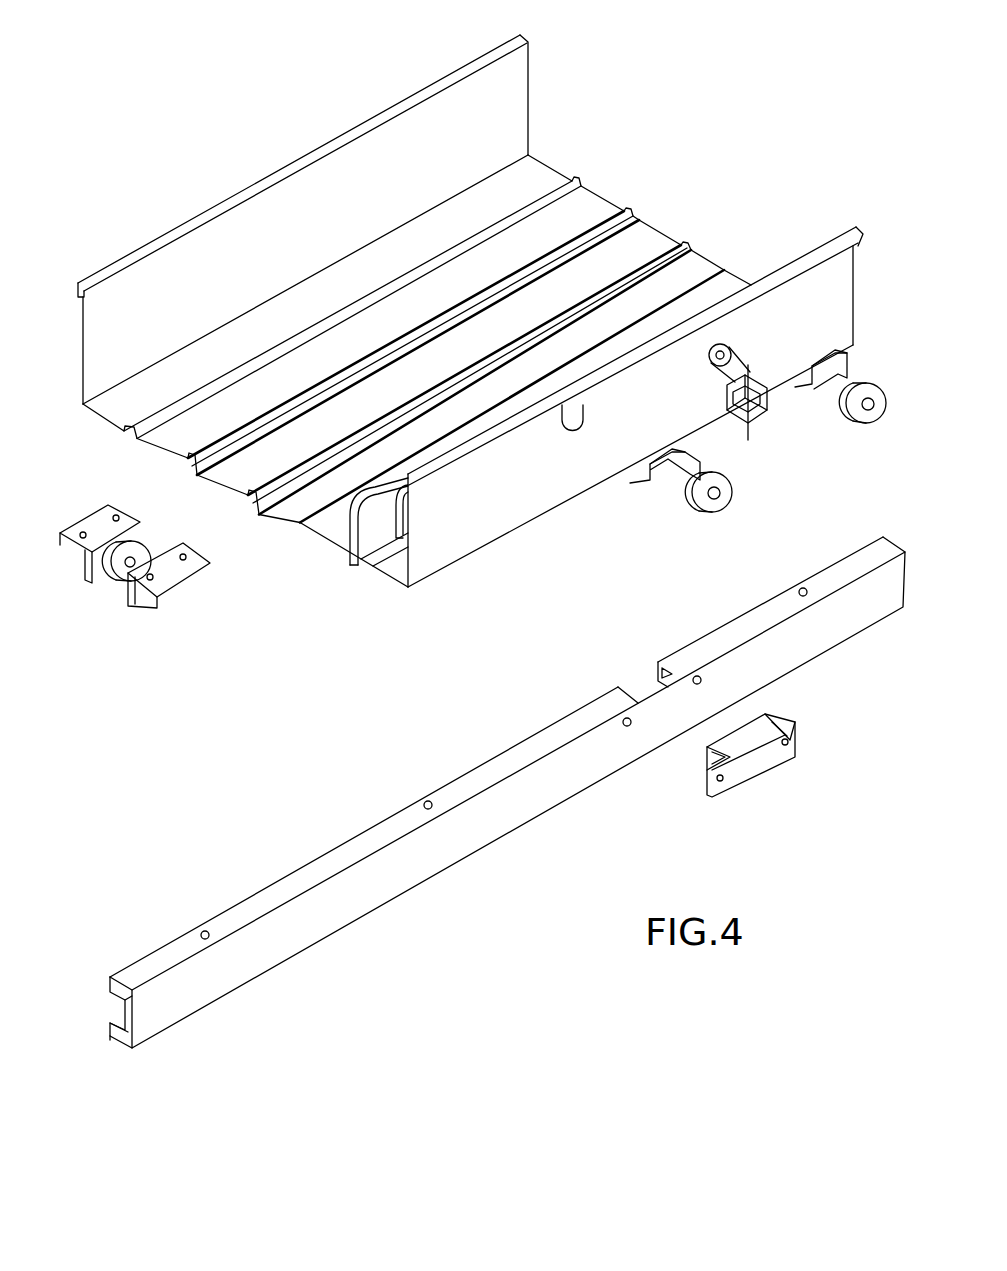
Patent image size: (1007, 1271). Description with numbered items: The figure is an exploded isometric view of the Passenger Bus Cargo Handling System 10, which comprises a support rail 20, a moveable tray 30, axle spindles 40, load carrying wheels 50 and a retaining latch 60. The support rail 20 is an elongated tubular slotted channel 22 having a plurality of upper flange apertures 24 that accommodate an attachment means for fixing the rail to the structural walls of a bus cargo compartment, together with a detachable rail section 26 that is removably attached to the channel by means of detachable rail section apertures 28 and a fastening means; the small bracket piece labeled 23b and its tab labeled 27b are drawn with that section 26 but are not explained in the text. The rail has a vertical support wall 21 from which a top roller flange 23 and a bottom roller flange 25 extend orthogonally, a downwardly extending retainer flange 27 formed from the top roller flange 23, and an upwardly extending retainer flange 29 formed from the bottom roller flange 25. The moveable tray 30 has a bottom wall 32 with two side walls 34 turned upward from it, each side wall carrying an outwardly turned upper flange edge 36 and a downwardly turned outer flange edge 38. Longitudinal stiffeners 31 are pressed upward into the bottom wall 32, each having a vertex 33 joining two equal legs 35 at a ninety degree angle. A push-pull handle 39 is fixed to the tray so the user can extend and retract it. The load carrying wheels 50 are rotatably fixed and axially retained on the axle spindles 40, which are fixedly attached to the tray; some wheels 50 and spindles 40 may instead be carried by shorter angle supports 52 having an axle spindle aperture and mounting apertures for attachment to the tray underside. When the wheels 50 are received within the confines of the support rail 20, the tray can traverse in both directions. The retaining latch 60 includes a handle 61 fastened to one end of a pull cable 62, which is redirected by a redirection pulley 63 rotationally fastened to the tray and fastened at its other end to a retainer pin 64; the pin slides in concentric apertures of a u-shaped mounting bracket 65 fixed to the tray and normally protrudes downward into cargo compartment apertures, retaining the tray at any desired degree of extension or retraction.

The Passenger Bus Cargo Handling System 10 is at (726, 116).
The support rail 20 is at (900, 535).
The vertical support wall 21 is at (383, 882).
The elongated tubular slotted channel 22 is at (148, 968).
The top roller flange 23 is at (307, 877).
The connector bracket 23b is at (747, 730).
The upper flange apertures 24 is at (205, 928).
The bottom roller flange 25 is at (130, 1046).
The detachable rail section 26 is at (753, 758).
The downwardly extending retainer flange 27 is at (110, 990).
The bracket tab 27b is at (708, 752).
The detachable rail section apertures 28 is at (790, 758).
The upwardly extending retainer flange 29 is at (100, 1030).
The moveable tray 30 is at (534, 80).
The longitudinal stiffeners 31 is at (590, 166).
The bottom wall 32 is at (703, 282).
The vertex 33 is at (700, 248).
The side walls 34 is at (493, 125).
The equal legs 35 is at (127, 428).
The upper flange edges 36 is at (403, 102).
The outer flange edges 38 is at (78, 290).
The push-pull handle 39 is at (334, 558).
The axle spindles 40 is at (685, 476).
The load carrying wheels 50 is at (852, 386).
The angle supports 52 is at (100, 509).
The retaining latch 60 is at (345, 574).
The handle 61 is at (410, 537).
The pull cable 62 is at (578, 422).
The redirection pulley 63 is at (712, 366).
The retainer pin 64 is at (735, 400).
The mounting bracket 65 is at (748, 372).